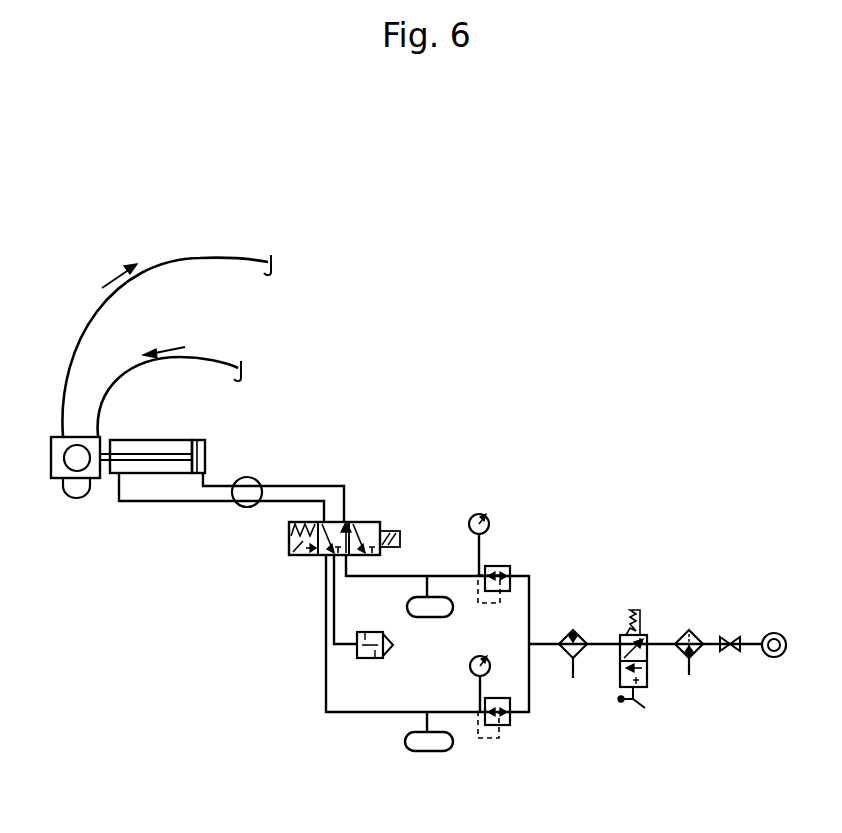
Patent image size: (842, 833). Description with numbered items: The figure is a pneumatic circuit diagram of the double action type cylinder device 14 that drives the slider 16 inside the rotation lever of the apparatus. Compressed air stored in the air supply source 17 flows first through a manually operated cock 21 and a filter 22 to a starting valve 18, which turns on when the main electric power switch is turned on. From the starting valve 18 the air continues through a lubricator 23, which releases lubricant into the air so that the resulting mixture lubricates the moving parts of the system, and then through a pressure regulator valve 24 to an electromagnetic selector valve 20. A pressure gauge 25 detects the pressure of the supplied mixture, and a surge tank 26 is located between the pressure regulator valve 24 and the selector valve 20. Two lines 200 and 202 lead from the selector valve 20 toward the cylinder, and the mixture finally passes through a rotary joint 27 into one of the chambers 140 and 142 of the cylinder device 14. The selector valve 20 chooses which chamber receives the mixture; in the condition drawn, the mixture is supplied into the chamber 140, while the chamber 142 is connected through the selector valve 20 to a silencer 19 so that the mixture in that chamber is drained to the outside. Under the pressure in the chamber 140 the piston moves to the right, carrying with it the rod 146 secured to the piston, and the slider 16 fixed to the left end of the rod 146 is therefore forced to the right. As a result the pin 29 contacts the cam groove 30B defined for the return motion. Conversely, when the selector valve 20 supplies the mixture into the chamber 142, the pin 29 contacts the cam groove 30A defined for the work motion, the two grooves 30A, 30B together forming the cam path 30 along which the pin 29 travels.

The cylinder device 14 is at (173, 440).
The chamber 140 is at (138, 446).
The chamber 142 is at (206, 456).
The rod 146 is at (166, 459).
The slider 16 is at (96, 480).
The pin 29 is at (77, 470).
The rotary joint 27 is at (254, 478).
The air line 200 is at (312, 487).
The air line 202 is at (270, 502).
The electromagnetic selector valve 20 is at (314, 556).
The silencer 19 is at (377, 659).
The surge tank 26 is at (443, 613).
The pressure gauge 25 is at (489, 517).
The pressure regulator valve 24 is at (506, 566).
The lubricator 23 is at (578, 637).
The starting valve 18 is at (643, 637).
The filter 22 is at (692, 634).
The manually operated cock 21 is at (737, 637).
The air supply source 17 is at (771, 658).
The swing paths 30 is at (219, 302).
The cam groove 30A is at (202, 258).
The cam groove 30B is at (204, 358).